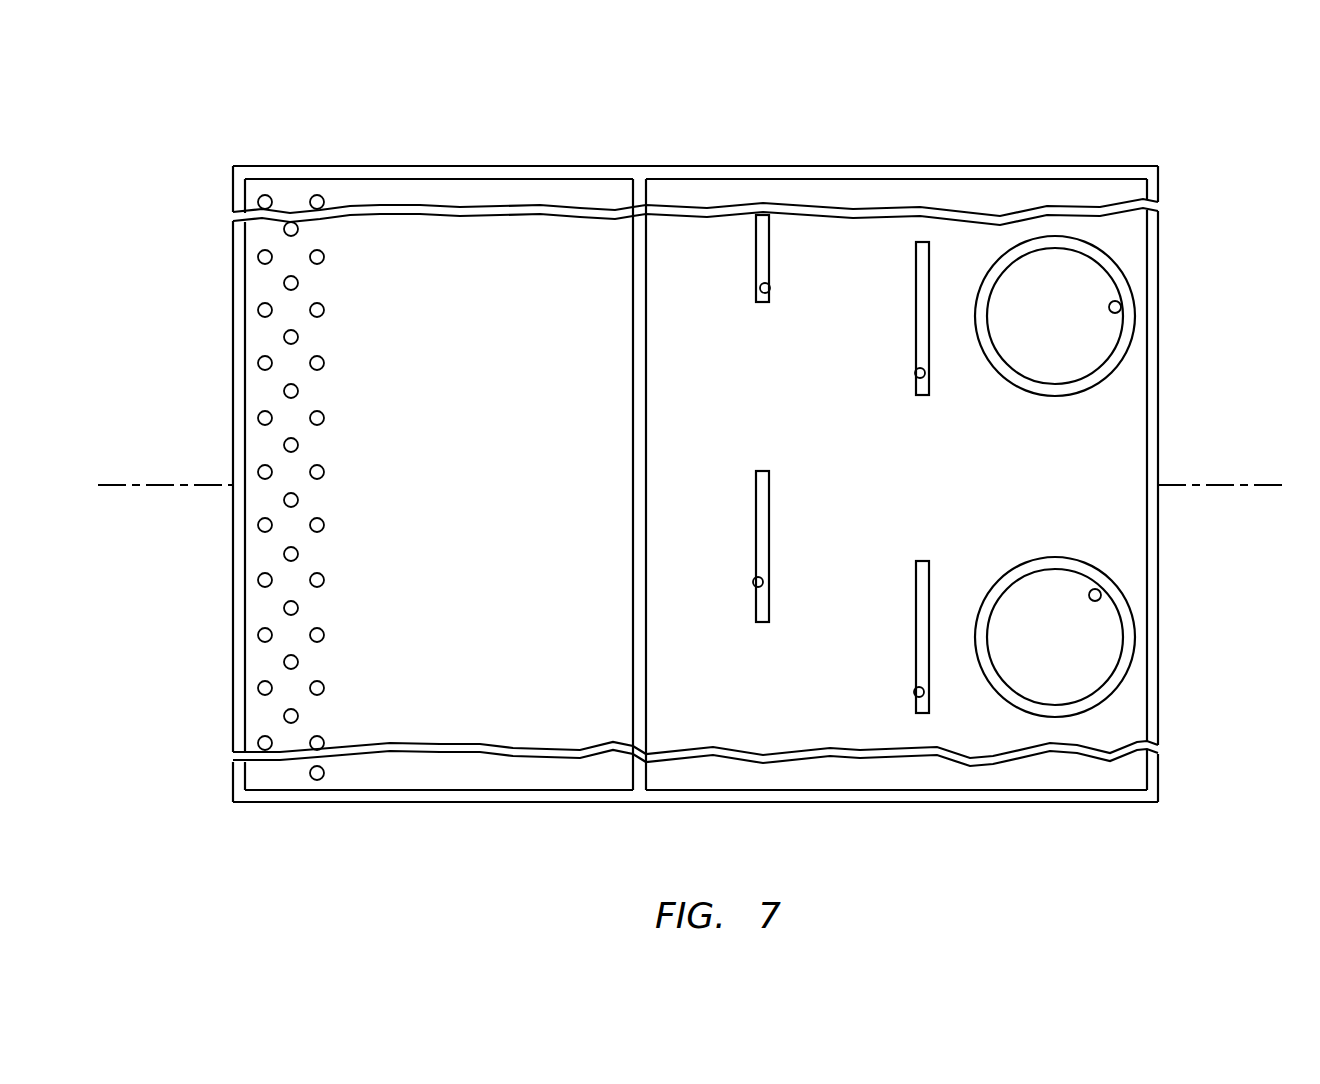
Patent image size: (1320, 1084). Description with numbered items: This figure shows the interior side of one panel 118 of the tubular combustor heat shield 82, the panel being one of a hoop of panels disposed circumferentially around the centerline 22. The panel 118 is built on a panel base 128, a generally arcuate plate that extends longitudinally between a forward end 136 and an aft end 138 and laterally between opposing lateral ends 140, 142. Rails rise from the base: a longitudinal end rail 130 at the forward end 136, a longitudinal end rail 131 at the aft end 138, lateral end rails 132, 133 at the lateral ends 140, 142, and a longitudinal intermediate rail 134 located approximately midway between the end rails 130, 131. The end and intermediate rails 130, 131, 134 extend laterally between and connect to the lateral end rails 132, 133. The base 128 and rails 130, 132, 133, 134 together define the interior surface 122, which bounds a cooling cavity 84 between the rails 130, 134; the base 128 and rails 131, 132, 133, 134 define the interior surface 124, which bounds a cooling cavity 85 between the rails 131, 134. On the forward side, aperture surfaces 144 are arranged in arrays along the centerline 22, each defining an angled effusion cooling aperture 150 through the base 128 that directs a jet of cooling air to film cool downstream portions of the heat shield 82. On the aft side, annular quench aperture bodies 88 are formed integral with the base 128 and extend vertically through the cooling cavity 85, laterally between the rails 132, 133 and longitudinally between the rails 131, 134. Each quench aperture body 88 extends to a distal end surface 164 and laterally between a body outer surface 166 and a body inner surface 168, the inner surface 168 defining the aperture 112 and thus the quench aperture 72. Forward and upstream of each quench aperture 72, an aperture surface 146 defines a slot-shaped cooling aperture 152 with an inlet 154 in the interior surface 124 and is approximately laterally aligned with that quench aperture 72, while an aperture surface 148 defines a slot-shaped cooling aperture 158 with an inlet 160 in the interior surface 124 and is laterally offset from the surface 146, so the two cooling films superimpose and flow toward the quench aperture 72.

The centerline 22 is at (1230, 483).
The quench aperture 72 is at (1105, 484).
The combustor heat shield 82 is at (716, 495).
The panel 118 is at (716, 495).
The cooling cavity 84 is at (555, 770).
The cooling cavity 85 is at (752, 770).
The quench aperture body 88 is at (1022, 383).
The aperture 112 is at (1057, 370).
The interior surface 122 is at (505, 582).
The interior surface 124 is at (798, 605).
The panel base 128 is at (462, 775).
The longitudinal end rail 130 is at (242, 608).
The longitudinal end rail 131 is at (1153, 637).
The lateral end rail 132 is at (410, 175).
The lateral end rail 133 is at (378, 795).
The longitudinal intermediate rail 134 is at (638, 632).
The longitudinal forward end 136 is at (232, 647).
The longitudinal aft end 138 is at (1160, 662).
The lateral end 140 is at (358, 165).
The lateral end 142 is at (333, 805).
The aperture surface 144 is at (322, 312).
The aperture surface 146 is at (916, 377).
The aperture surface 148 is at (767, 302).
The cooling aperture 150 is at (272, 362).
The cooling aperture 152 is at (903, 492).
The inlet 154 is at (916, 295).
The cooling aperture 158 is at (765, 418).
The inlet 160 is at (769, 233).
The distal end surface 164 is at (1109, 490).
The body outer surface 166 is at (1105, 476).
The body inner surface 168 is at (1115, 300).